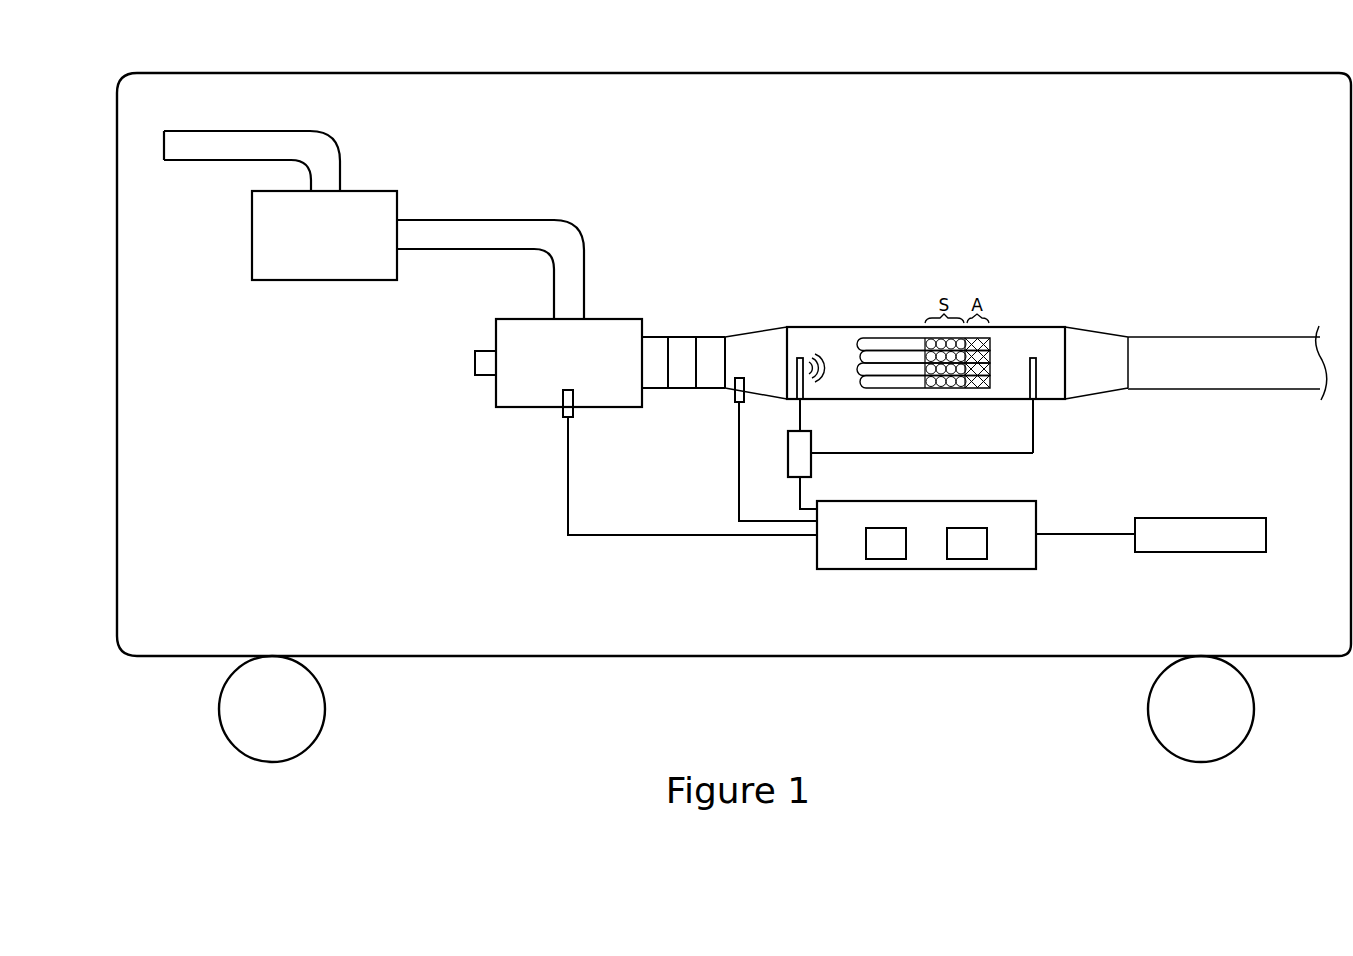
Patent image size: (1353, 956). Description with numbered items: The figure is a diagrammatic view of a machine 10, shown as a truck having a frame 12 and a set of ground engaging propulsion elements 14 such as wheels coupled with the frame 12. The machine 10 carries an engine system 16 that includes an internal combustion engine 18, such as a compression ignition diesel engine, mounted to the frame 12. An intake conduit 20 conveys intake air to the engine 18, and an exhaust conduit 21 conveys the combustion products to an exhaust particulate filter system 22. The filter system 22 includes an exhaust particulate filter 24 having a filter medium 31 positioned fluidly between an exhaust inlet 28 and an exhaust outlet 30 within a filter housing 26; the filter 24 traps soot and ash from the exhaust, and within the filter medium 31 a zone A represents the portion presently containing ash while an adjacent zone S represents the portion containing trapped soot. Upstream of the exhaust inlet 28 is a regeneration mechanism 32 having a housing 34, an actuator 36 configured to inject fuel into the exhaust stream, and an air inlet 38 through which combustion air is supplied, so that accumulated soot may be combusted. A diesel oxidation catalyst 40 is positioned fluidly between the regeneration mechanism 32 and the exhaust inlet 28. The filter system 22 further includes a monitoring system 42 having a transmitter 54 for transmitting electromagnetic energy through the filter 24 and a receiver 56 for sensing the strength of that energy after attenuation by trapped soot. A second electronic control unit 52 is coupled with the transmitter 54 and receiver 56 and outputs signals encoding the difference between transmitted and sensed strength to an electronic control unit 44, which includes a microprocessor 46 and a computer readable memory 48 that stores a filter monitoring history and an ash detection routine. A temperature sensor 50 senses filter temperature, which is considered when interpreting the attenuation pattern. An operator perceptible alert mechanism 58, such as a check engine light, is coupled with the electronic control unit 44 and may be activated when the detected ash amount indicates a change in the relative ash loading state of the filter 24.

The machine 10 is at (1166, 60).
The frame 12 is at (750, 657).
The ground engaging propulsion elements 14 is at (220, 688).
The engine system 16 is at (309, 330).
The internal combustion engine 18 is at (377, 191).
The intake conduit 20 is at (290, 131).
The exhaust conduit 21 is at (531, 220).
The exhaust particulate filter system 22 is at (1049, 250).
The exhaust particulate filter 24 is at (1012, 317).
The filter housing 26 is at (827, 327).
The exhaust inlet 28 is at (723, 337).
The exhaust outlet 30 is at (1129, 337).
The filter medium 31 is at (917, 388).
The regeneration mechanism 32 is at (512, 455).
The housing 34 is at (608, 407).
The actuator 36 is at (563, 408).
The air inlet 38 is at (475, 367).
The diesel oxidation catalyst 40 is at (671, 337).
The monitoring system 42 is at (1029, 467).
The electronic control unit 44 is at (928, 569).
The microprocessor 46 is at (876, 559).
The computer readable memory 48 is at (976, 559).
The temperature sensor 50 is at (735, 392).
The second electronic control unit 52 is at (812, 465).
The transmitter 54 is at (805, 380).
The receiver 56 is at (1033, 378).
The operator perceptible alert mechanism 58 is at (1200, 552).